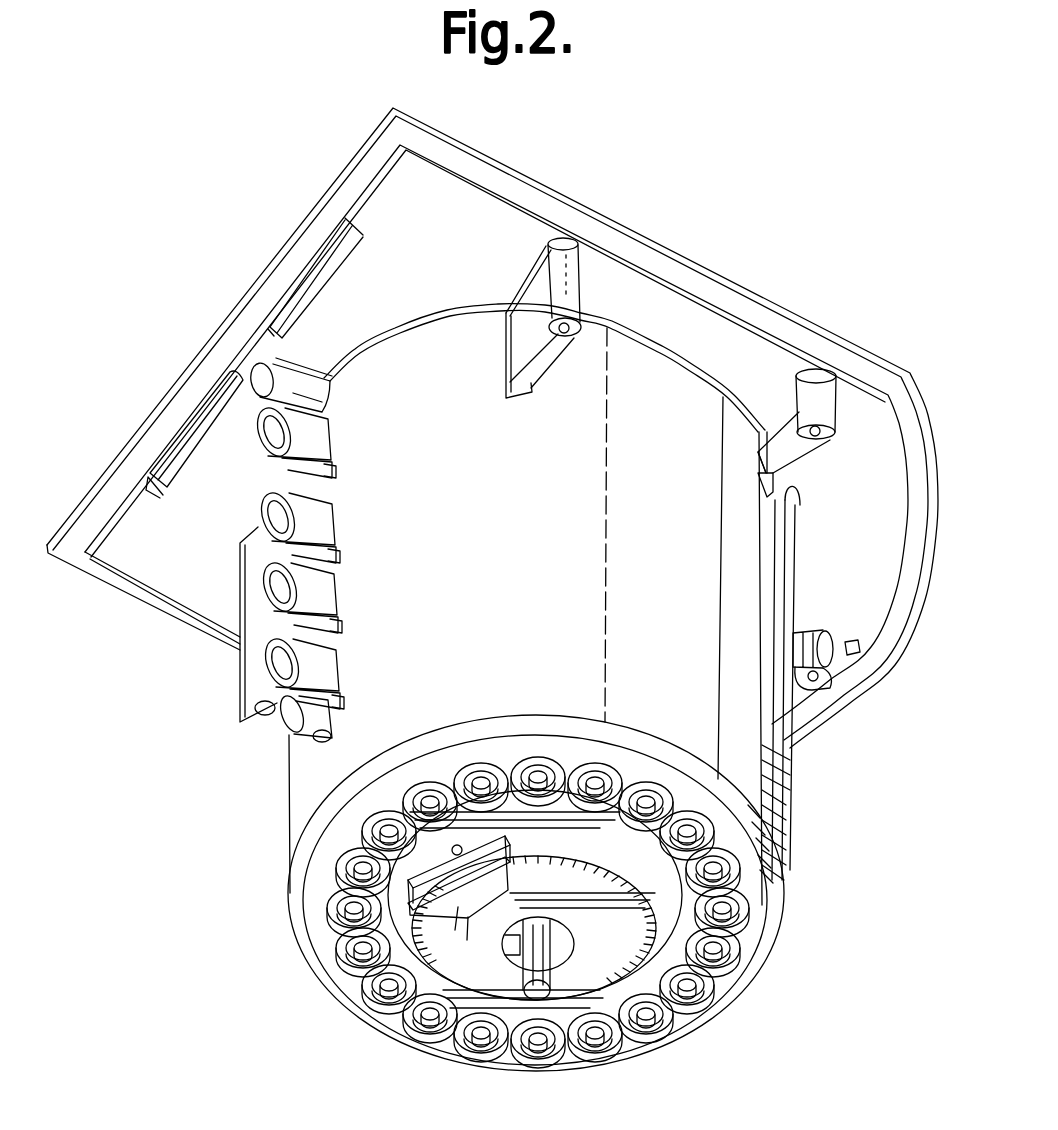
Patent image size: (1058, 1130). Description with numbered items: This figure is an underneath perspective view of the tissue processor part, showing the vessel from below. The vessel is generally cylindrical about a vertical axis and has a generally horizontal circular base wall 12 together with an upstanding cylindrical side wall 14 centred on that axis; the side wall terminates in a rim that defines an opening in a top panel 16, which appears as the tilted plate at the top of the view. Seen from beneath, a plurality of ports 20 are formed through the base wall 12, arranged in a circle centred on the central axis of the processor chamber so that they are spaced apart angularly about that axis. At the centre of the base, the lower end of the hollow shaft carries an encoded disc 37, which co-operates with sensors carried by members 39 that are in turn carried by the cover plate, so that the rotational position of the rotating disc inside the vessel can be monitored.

The base wall 12 is at (770, 883).
The cylindrical side wall 14 is at (740, 737).
The top panel 16 is at (753, 355).
The ports 20 is at (356, 980).
The encoded disc 37 is at (607, 973).
The members 39 is at (470, 892).